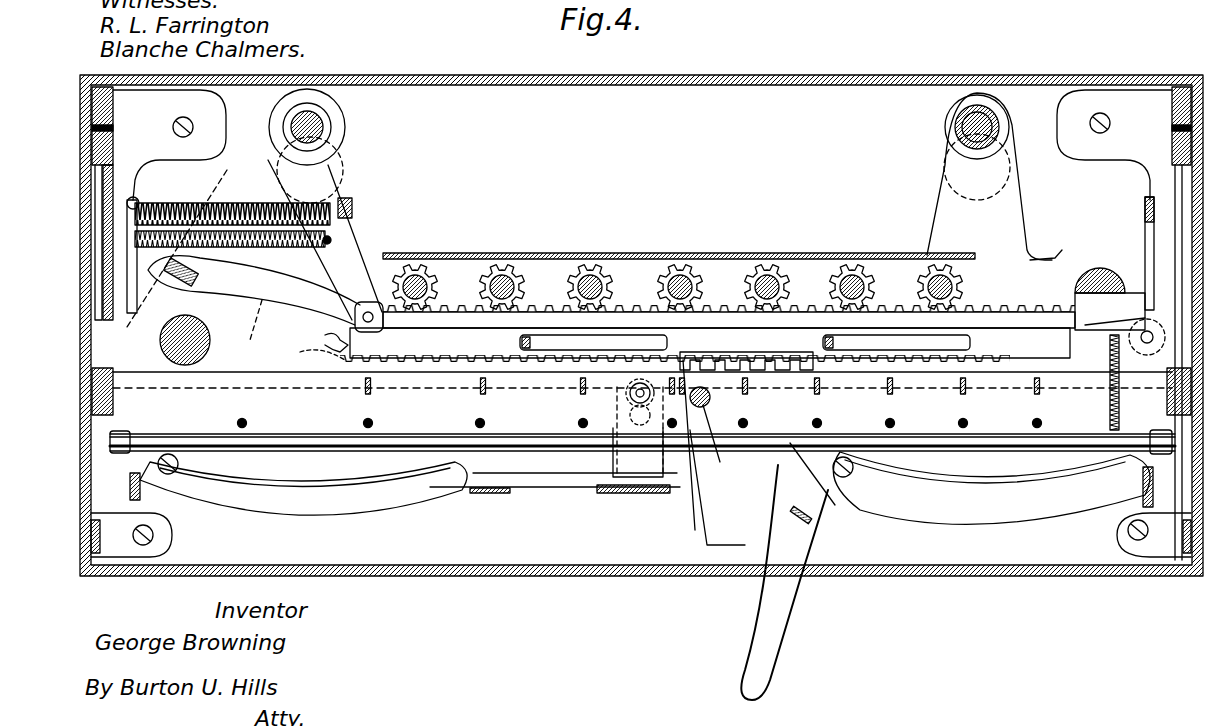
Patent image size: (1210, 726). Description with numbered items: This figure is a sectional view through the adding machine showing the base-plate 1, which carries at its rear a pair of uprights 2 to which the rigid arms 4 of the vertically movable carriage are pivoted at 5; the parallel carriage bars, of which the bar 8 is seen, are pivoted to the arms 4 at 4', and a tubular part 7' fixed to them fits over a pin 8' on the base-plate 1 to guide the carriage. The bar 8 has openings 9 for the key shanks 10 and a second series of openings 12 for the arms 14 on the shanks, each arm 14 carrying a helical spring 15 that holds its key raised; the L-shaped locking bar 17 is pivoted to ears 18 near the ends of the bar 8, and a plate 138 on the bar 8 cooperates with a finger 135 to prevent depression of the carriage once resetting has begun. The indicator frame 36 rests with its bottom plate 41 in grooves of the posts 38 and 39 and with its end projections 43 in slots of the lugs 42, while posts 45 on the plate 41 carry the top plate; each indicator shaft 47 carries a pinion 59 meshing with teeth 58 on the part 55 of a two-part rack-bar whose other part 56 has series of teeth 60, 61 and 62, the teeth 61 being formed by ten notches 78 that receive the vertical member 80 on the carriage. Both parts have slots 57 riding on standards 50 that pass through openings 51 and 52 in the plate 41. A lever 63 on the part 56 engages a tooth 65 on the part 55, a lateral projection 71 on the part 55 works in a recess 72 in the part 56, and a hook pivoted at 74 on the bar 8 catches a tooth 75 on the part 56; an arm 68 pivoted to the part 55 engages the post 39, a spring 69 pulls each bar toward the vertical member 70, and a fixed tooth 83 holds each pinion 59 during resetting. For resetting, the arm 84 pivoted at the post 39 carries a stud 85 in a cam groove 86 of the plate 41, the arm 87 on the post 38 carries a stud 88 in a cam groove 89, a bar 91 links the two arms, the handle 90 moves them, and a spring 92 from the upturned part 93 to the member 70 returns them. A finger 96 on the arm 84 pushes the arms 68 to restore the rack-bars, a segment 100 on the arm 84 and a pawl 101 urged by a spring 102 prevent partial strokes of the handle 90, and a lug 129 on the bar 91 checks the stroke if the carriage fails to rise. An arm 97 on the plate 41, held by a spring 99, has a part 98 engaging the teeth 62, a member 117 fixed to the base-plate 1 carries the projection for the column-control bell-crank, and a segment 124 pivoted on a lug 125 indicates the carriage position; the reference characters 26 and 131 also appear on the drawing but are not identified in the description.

The base-plate 1 is at (453, 88).
The uprights 2 is at (113, 100).
The rigid arm 4 is at (638, 359).
The pivotal attachment 4' is at (641, 380).
The pivot 5 is at (113, 128).
The tubular part 7' is at (622, 402).
The bar 8 is at (642, 389).
The pin 8' is at (615, 382).
The openings 9 is at (895, 388).
The key shank 10 is at (374, 383).
The openings 12 is at (375, 422).
The arm 14 is at (365, 420).
The helical spring 15 is at (968, 422).
The bar 17 is at (130, 445).
The ear 18 is at (641, 510).
The corner bracket 26 is at (165, 480).
The frame 36 is at (480, 262).
The post 38 is at (985, 96).
The post 39 is at (312, 112).
The bottom plate 41 is at (1042, 260).
The lugs 42 is at (200, 478).
The projecting part 43 is at (1152, 500).
The posts 45 is at (210, 325).
The shaft 47 is at (630, 262).
The vertical standards 50 is at (535, 330).
The openings 51 is at (990, 378).
The openings 52 is at (555, 372).
The rack-bar part 55 is at (800, 300).
The rack-bar part 56 is at (857, 347).
The slot 57 is at (668, 340).
The teeth 58 is at (707, 287).
The pinion 59 is at (440, 262).
The teeth 60 is at (568, 372).
The teeth 61 is at (763, 380).
The teeth 62 is at (730, 253).
The lever 63 is at (940, 250).
The tooth 65 is at (1110, 311).
The arm 68 is at (360, 250).
The spring 69 is at (205, 215).
The vertical member 70 is at (138, 280).
The lateral projection 71 is at (354, 317).
The recess 72 is at (325, 340).
The pivot 74 is at (1145, 355).
The tooth 75 is at (1077, 350).
The lateral notches 78 is at (722, 440).
The vertical member 80 is at (702, 445).
The fixed tooth 83 is at (520, 253).
The arm 84 is at (188, 236).
The stud 85 is at (185, 463).
The cam groove 86 is at (405, 510).
The arm 87 is at (905, 218).
The stud 88 is at (862, 468).
The cam groove 89 is at (955, 490).
The handle 90 is at (790, 605).
The bar 91 is at (800, 480).
The spring 92 is at (170, 205).
The upturned part 93 is at (355, 215).
The finger 96 is at (200, 275).
The arm 97 is at (254, 294).
The vertically projecting part 98 is at (322, 361).
The spring 99 is at (272, 314).
The segment 100 is at (312, 490).
The pawl 101 is at (510, 372).
The spring 102 is at (572, 339).
The member 117 is at (1145, 220).
The segment 124 is at (610, 493).
The lug 125 is at (643, 485).
The lug 129 is at (487, 493).
The frame bottom 131 is at (960, 572).
The finger 135 is at (718, 487).
The plate 138 is at (640, 460).